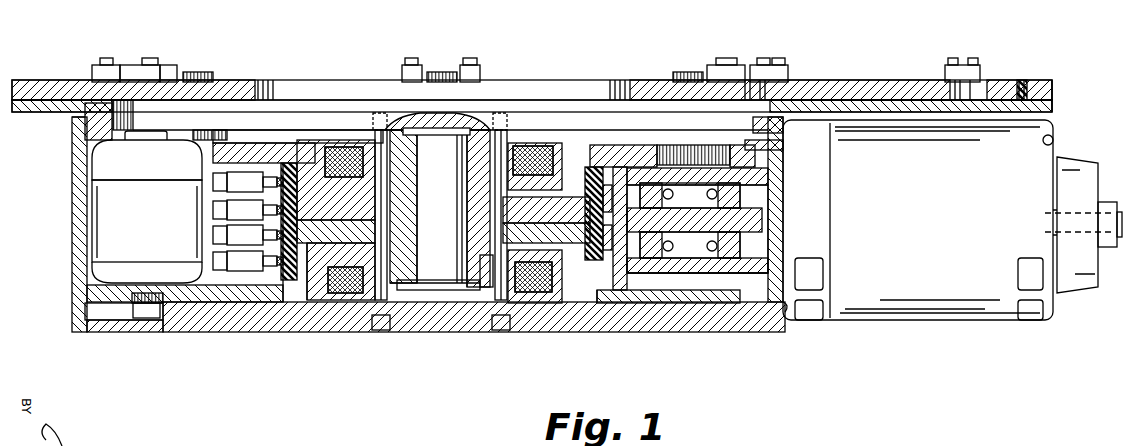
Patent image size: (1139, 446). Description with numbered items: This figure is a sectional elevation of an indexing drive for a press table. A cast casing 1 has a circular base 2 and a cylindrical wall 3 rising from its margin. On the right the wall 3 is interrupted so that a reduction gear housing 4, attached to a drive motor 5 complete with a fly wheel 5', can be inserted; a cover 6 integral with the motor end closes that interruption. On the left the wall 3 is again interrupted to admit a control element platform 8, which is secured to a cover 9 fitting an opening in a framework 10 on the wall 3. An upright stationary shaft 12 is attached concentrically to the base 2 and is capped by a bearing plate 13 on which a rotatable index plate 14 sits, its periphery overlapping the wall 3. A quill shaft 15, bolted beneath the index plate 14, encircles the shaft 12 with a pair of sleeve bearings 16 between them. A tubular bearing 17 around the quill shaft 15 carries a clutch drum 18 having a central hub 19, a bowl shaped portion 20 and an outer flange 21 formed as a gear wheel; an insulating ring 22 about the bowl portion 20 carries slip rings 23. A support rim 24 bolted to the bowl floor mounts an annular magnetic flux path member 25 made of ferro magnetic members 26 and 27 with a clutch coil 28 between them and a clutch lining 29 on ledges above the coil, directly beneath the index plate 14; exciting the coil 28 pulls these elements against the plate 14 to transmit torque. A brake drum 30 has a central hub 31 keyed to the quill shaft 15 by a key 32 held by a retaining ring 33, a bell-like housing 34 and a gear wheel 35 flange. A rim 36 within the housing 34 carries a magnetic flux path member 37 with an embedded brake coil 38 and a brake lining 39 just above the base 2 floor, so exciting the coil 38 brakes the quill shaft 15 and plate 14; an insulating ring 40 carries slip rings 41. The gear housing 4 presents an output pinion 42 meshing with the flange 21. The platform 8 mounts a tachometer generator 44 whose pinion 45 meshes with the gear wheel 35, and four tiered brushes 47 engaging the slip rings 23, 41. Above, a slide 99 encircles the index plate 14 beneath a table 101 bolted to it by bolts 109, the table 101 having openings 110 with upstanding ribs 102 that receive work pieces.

The casing 1 is at (650, 335).
The circular base 2 is at (683, 322).
The cylindrical wall 3 is at (757, 143).
The reduction gear housing 4 is at (717, 274).
The drive motor 5 is at (918, 236).
The fly wheel 5' is at (1083, 205).
The cover 6 is at (785, 308).
The control element platform 8 is at (210, 280).
The cover 9 is at (72, 222).
The framework 10 is at (100, 118).
The stationary shaft 12 is at (435, 290).
The bearing plate 13 is at (443, 127).
The index plate 14 is at (532, 110).
The quill shaft 15 is at (416, 190).
The sleeve bearings 16 is at (418, 162).
The tubular bearing 17 is at (397, 207).
The clutch drum 18 is at (287, 140).
The central hub 19 is at (497, 167).
The bowl shaped portion 20 is at (540, 212).
The outer flange 21 is at (245, 143).
The insulating ring 22 is at (295, 163).
The slip rings 23 is at (607, 188).
The support rim 24 is at (382, 221).
The magnetic flux path member 25 is at (322, 140).
The ferro magnetic member 26 is at (560, 148).
The ferro magnetic member 27 is at (512, 147).
The clutch coil 28 is at (534, 158).
The clutch lining 29 is at (368, 125).
The brake drum 30 is at (620, 290).
The central hub 31 is at (393, 263).
The key 32 is at (494, 271).
The retaining ring 33 is at (472, 267).
The bell-like housing 34 is at (527, 237).
The gear wheel 35 is at (647, 293).
The rim 36 is at (343, 250).
The magnetic flux path member 37 is at (558, 252).
The brake coil 38 is at (343, 280).
The brake lining 39 is at (332, 290).
The insulating ring 40 is at (277, 273).
The slip rings 41 is at (613, 240).
The output pinion 42 is at (710, 147).
The tachometer generator 44 is at (107, 162).
The pinion 45 is at (127, 297).
The brushes 47 is at (267, 208).
The slide 99 is at (1053, 107).
The table 101 is at (883, 82).
The upstanding ribs 102 is at (147, 73).
The bolts 109 is at (195, 72).
The openings 110 is at (1020, 82).